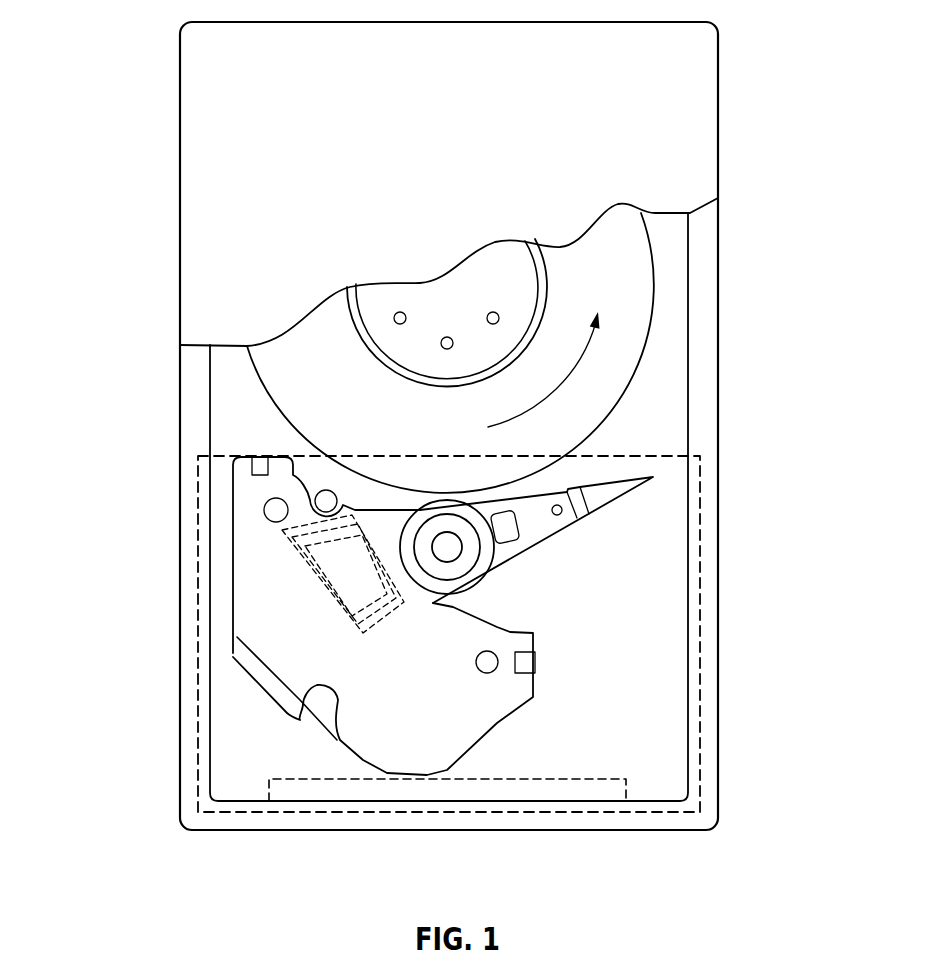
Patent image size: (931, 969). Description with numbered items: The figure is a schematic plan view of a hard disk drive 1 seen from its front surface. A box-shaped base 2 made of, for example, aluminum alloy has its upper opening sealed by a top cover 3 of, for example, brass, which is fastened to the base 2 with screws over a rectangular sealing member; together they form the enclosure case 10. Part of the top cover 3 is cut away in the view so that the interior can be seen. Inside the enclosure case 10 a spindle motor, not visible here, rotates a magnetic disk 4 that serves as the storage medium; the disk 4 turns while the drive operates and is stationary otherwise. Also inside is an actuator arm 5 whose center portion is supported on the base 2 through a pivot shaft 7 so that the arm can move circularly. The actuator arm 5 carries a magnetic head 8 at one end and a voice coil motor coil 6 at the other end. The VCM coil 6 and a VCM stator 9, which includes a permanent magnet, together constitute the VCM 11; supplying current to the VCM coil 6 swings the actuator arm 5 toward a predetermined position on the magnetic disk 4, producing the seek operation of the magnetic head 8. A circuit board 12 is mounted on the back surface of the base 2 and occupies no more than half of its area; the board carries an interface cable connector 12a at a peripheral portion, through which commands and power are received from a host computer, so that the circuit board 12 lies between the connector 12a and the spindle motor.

The hard disk drive 1 is at (744, 57).
The base 2 is at (181, 372).
The top cover 3 is at (190, 317).
The magnetic disk 4 is at (647, 312).
The actuator arm 5 is at (534, 547).
The VCM coil 6 is at (313, 593).
The pivot shaft 7 is at (460, 557).
The magnetic head 8 is at (653, 479).
The VCM stator 9 is at (297, 643).
The enclosure case 10 is at (374, 499).
The VCM 11 is at (288, 616).
The circuit board 12 is at (491, 634).
The interface cable connector 12a is at (523, 777).